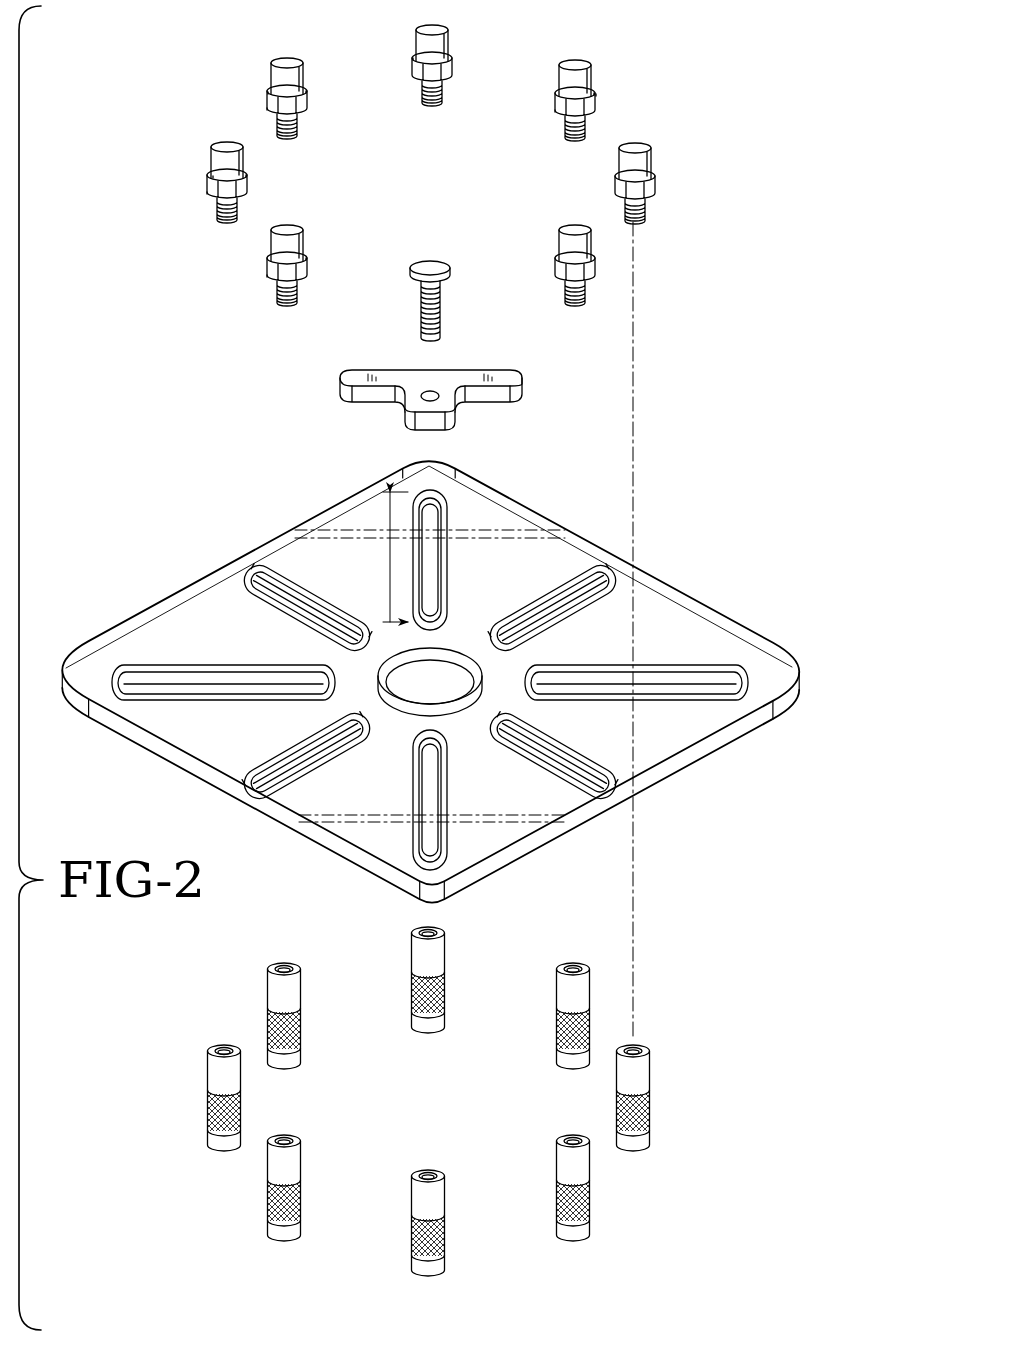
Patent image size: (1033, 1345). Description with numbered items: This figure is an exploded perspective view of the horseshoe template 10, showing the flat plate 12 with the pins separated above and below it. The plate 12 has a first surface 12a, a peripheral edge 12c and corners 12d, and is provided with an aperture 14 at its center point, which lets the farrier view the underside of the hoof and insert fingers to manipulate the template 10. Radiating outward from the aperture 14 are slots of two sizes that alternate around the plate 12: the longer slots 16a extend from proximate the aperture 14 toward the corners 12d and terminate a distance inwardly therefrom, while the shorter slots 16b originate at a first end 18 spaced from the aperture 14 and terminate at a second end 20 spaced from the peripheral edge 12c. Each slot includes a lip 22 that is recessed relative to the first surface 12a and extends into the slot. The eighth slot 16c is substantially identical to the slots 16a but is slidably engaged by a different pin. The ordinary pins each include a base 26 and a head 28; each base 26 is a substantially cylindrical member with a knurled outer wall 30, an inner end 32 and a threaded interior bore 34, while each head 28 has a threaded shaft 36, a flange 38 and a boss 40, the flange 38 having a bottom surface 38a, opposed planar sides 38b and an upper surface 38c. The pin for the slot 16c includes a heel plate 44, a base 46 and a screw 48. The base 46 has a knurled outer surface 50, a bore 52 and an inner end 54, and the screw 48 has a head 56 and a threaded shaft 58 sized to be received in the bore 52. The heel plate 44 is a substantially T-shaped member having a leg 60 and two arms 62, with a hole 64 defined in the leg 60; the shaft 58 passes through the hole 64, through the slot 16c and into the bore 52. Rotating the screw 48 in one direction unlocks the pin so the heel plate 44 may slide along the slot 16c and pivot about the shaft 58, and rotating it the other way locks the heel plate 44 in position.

The horseshoe template 10 is at (672, 405).
The plate 12 is at (423, 680).
The first surface 12a is at (215, 600).
The peripheral edge 12c is at (272, 540).
The corners 12d is at (432, 463).
The aperture 14 is at (462, 650).
The slots 16a is at (448, 560).
The slots 16b is at (300, 590).
The eighth slot 16c is at (450, 795).
The first end 18 is at (100, 706).
The second end 20 is at (378, 679).
The lip 22 is at (318, 612).
The base 26 is at (428, 1073).
The head 28 is at (429, 186).
The knurled outer wall 30 is at (300, 1025).
The inner end 32 is at (270, 965).
The threaded interior bore 34 is at (285, 963).
The threaded shaft 36 is at (285, 298).
The flange 38 is at (205, 183).
The bottom surface 38a is at (300, 115).
The opposed planar sides 38b is at (268, 103).
The upper surface 38c is at (305, 95).
The boss 40 is at (228, 148).
The heel plate 44 is at (429, 388).
The base 46 is at (387, 1196).
The screw 48 is at (392, 278).
The knurled outer surface 50 is at (412, 1228).
The bore 52 is at (430, 1170).
The inner end 54 is at (415, 1168).
The head 56 is at (430, 268).
The threaded shaft 58 is at (420, 305).
The leg 60 is at (405, 420).
The arms 62 is at (350, 375).
The hole 64 is at (432, 390).